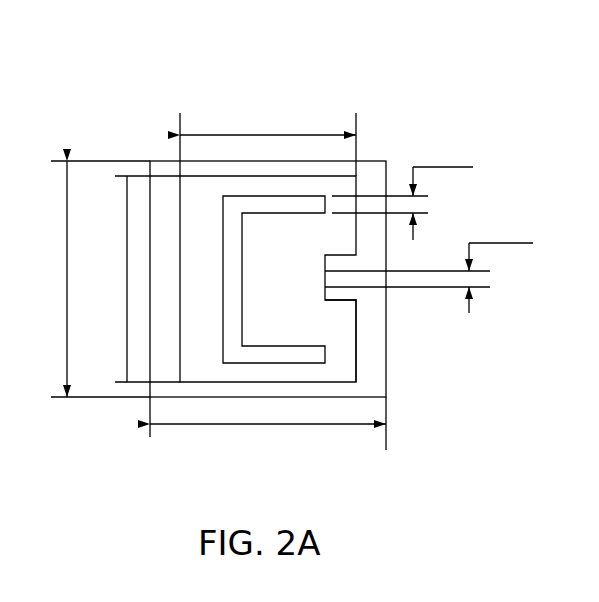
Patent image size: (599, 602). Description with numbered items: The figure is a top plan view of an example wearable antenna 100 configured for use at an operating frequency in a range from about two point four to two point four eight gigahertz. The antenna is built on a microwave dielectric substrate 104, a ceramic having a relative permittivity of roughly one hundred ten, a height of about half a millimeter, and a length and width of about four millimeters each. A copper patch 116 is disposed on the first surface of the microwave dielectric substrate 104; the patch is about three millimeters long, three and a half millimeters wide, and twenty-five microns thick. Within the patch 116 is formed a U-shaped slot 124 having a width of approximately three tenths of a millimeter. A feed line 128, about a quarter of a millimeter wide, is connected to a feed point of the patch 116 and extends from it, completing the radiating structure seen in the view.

The antenna 100 is at (232, 113).
The microwave dielectric substrate 104 is at (207, 368).
The patch 116 is at (345, 357).
The U-shaped slot 124 is at (297, 355).
The feed line 128 is at (372, 278).